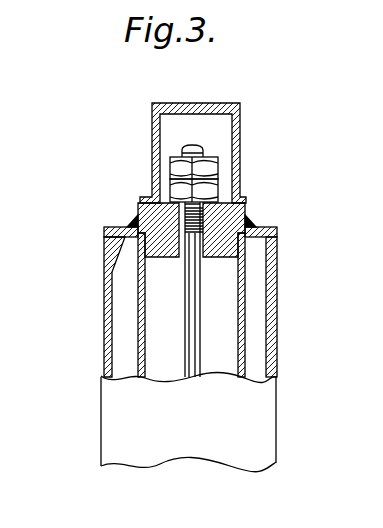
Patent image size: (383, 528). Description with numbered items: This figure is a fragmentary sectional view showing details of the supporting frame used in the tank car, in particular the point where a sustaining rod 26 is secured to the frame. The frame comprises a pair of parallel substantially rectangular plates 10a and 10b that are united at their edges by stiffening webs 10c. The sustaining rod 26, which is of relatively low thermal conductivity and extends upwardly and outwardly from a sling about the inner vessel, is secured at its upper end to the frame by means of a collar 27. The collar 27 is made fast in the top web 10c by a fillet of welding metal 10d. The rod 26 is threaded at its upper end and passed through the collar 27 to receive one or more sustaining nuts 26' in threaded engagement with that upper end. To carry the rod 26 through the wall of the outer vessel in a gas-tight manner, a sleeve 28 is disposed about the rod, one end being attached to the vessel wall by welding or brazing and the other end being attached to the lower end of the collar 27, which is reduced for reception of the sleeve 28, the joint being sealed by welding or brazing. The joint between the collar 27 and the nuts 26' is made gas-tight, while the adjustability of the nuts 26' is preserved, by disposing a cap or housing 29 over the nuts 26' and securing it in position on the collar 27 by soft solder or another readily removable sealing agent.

The cap 29 is at (241, 108).
The sustaining nuts 26' is at (228, 179).
The collar 27 is at (138, 209).
The fillet of welding metal 10d is at (250, 225).
The stiffening webs 10c is at (268, 229).
The plate 10a is at (278, 277).
The plate 10b is at (104, 320).
The sleeve 28 is at (247, 320).
The sustaining rod 26 is at (251, 261).